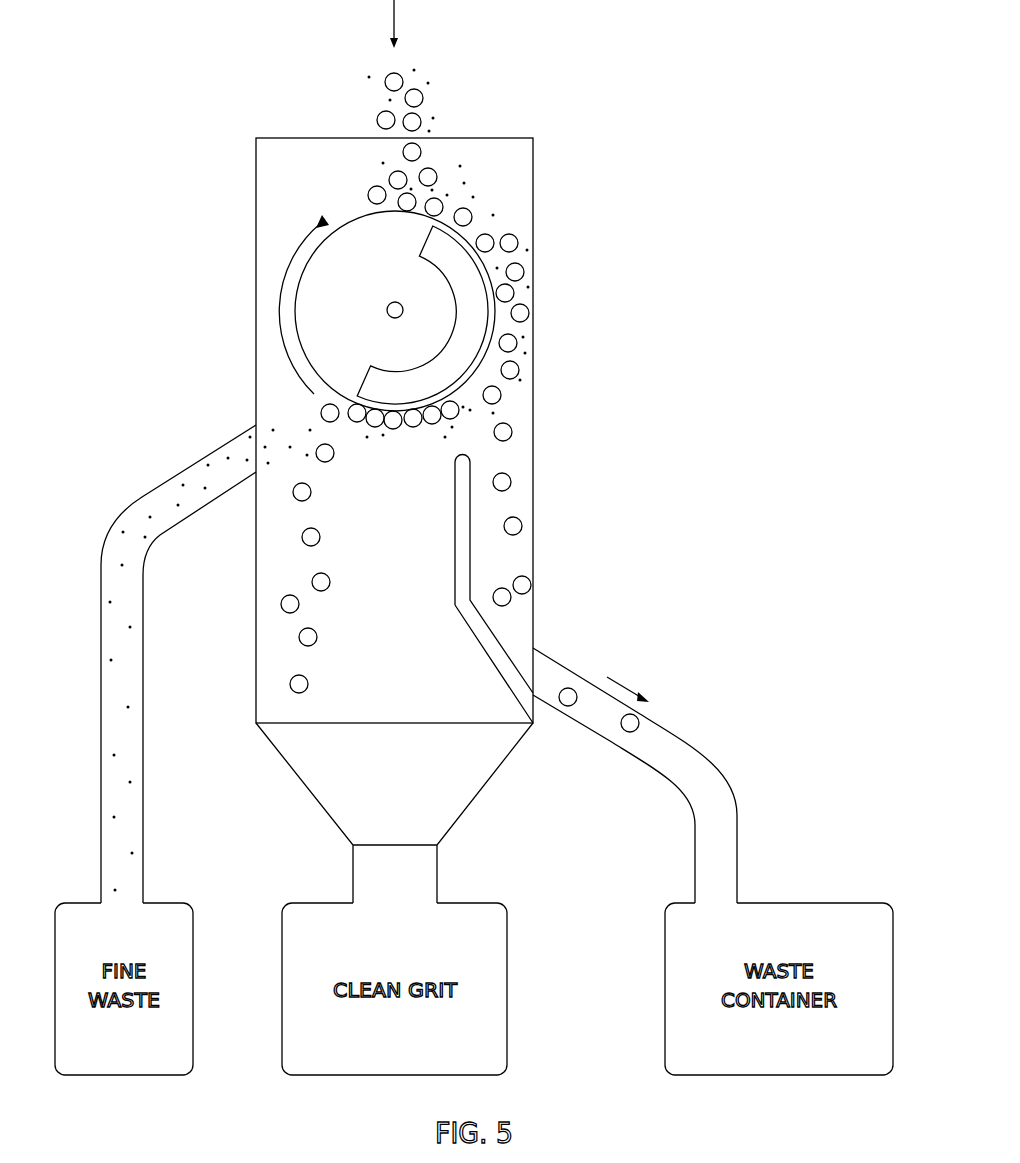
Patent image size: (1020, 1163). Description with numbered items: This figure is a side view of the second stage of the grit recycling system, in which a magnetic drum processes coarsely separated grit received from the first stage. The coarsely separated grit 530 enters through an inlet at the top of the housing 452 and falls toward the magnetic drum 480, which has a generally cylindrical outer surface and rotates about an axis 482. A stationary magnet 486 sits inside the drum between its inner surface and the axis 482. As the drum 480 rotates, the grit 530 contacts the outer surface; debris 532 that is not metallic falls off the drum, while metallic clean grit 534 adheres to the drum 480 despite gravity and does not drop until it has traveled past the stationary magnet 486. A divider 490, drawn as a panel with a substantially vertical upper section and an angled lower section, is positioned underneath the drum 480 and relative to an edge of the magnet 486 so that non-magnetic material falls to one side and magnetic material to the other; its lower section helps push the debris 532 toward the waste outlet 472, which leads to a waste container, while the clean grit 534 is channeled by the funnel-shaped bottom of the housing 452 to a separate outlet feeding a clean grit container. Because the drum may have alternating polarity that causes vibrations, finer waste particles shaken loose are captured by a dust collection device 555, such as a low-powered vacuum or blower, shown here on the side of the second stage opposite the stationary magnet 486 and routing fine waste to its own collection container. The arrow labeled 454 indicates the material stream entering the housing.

The housing 452 is at (534, 183).
The falling material stream 454 is at (448, 156).
The outlet 472 is at (534, 665).
The magnetic drum 480 is at (305, 327).
The axis 482 is at (389, 305).
The stationary magnet 486 is at (467, 330).
The divider 490 is at (470, 563).
The coarsely separated grit 530 is at (377, 118).
The debris 532 is at (511, 482).
The clean grit 534 is at (282, 608).
The dust collection device 555 is at (126, 506).